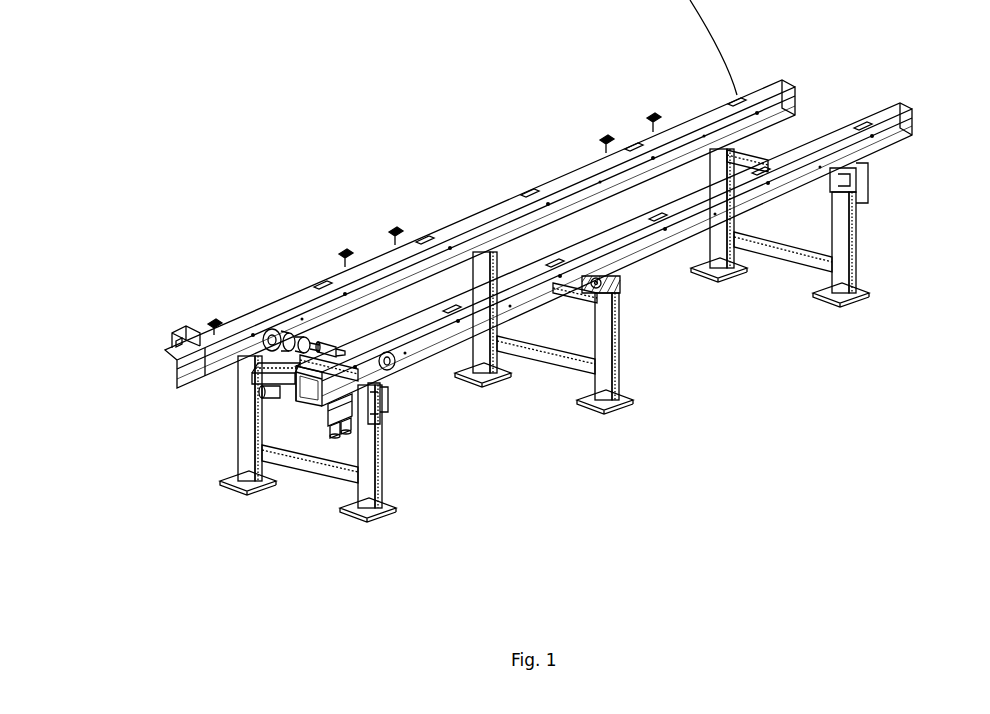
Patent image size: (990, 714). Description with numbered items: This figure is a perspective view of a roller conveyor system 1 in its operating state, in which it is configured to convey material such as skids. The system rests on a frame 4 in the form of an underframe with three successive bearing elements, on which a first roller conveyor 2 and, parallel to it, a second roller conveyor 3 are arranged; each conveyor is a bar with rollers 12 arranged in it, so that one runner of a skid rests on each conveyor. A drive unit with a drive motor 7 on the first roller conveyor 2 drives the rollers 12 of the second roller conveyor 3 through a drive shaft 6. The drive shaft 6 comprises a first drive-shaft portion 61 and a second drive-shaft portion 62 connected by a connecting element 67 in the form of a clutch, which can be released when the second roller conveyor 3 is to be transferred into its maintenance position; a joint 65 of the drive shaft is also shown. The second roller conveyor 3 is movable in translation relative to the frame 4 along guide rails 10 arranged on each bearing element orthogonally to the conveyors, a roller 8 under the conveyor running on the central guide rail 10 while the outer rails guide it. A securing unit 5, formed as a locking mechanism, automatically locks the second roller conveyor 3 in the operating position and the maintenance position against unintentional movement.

The roller conveyor system 1 is at (494, 148).
The first roller conveyor 2 is at (697, 121).
The second roller conveyor 3 is at (842, 155).
The frame 4 is at (380, 482).
The securing unit 5 is at (335, 412).
The drive shaft 6 is at (312, 337).
The drive motor 7 is at (175, 328).
The roller 8 is at (608, 280).
The guide rail 10 is at (600, 290).
The roller of a roller conveyor 12 is at (623, 133).
The first drive-shaft portion 61 is at (270, 352).
The second drive-shaft portion 62 is at (300, 392).
The joint of the drive shaft 65 is at (287, 352).
The connecting element 67 is at (330, 347).